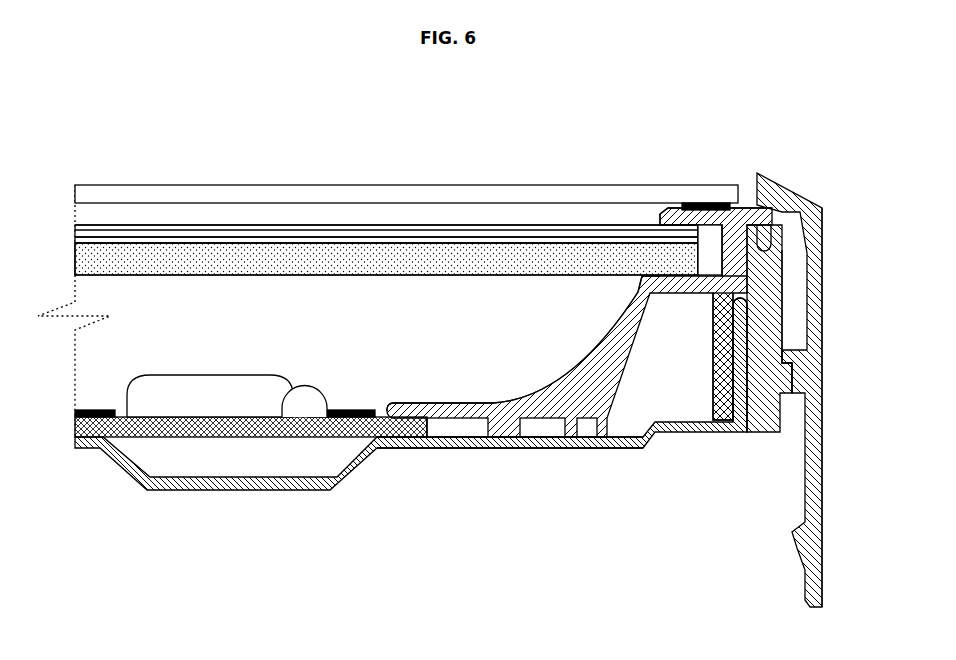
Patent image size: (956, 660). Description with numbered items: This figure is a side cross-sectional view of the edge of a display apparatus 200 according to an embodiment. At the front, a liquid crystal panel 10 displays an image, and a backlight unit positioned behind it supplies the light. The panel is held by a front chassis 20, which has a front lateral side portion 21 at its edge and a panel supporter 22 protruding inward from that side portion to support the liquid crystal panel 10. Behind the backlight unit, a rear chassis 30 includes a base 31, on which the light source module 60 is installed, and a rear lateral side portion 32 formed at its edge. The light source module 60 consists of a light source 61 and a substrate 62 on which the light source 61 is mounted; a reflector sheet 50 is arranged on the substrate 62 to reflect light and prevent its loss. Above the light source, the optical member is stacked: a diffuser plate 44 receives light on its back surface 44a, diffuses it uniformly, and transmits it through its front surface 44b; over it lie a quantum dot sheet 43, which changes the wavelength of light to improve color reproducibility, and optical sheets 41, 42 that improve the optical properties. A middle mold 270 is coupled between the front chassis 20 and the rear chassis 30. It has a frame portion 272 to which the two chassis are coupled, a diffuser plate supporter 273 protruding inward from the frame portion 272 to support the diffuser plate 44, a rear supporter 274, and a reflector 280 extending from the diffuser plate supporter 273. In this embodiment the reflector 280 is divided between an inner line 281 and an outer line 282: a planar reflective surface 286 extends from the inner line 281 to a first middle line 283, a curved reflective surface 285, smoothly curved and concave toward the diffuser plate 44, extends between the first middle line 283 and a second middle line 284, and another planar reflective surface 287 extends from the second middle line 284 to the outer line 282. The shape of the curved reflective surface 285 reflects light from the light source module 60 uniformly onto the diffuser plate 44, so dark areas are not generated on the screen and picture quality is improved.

The display apparatus 200 is at (496, 96).
The liquid crystal panel 10 is at (320, 195).
The front chassis 20 is at (823, 206).
The front lateral side portion 21 is at (823, 273).
The panel supporter 22 is at (690, 203).
The rear chassis 30 is at (352, 468).
The base 31 is at (437, 448).
The rear lateral side portion 32 is at (757, 368).
The optical sheet 41 is at (393, 225).
The optical sheet 42 is at (444, 230).
The quantum dot sheet 43 is at (494, 240).
The diffuser plate 44 is at (245, 262).
The back surface 44a is at (160, 276).
The front surface 44b is at (160, 243).
The reflector sheet 50 is at (296, 400).
The light source module 60 is at (230, 553).
The light source 61 is at (185, 395).
The substrate 62 is at (237, 430).
The middle mold 270 is at (823, 357).
The frame portion 272 is at (780, 300).
The diffuser plate supporter 273 is at (712, 300).
The rear supporter 274 is at (490, 435).
The reflector 280 is at (583, 397).
The inner line 281 is at (387, 403).
The outer line 282 is at (637, 277).
The first middle line 283 is at (478, 403).
The second middle line 284 is at (640, 300).
The curved reflective surface 285 is at (567, 373).
The planar reflective surface 286 is at (418, 403).
The planar reflective surface 287 is at (637, 293).